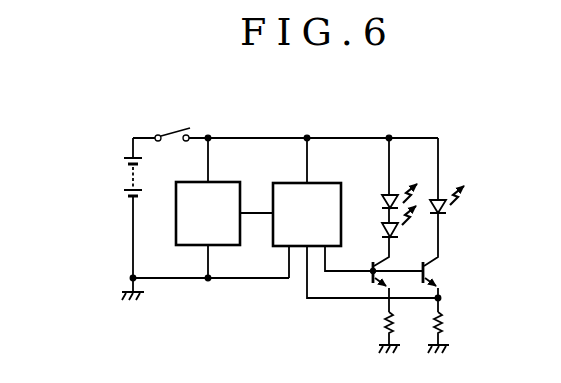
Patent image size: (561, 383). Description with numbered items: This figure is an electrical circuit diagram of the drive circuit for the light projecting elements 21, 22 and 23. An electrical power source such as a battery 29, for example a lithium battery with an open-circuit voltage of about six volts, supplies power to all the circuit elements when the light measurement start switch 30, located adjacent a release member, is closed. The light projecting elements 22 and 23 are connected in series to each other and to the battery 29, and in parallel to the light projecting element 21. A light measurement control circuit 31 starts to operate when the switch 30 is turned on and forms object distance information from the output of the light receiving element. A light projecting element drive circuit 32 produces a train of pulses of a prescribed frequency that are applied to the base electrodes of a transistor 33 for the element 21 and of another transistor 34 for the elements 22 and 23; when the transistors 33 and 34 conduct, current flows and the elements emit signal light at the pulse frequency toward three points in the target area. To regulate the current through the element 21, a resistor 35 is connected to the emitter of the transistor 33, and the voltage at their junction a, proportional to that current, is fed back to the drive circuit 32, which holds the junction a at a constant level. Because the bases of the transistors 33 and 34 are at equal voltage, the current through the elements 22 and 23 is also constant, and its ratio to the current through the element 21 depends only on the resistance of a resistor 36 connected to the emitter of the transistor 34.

The light projecting element 21 is at (447, 209).
The light projecting element 22 is at (383, 229).
The light projecting element 23 is at (382, 199).
The battery 29 is at (133, 182).
The light measurement start switch 30 is at (177, 130).
The light measurement control circuit 31 is at (224, 182).
The light projecting element drive circuit 32 is at (318, 183).
The transistor 33 is at (434, 268).
The transistor 34 is at (379, 285).
The resistor 35 is at (441, 328).
The resistor 36 is at (388, 321).
The junction a is at (441, 298).